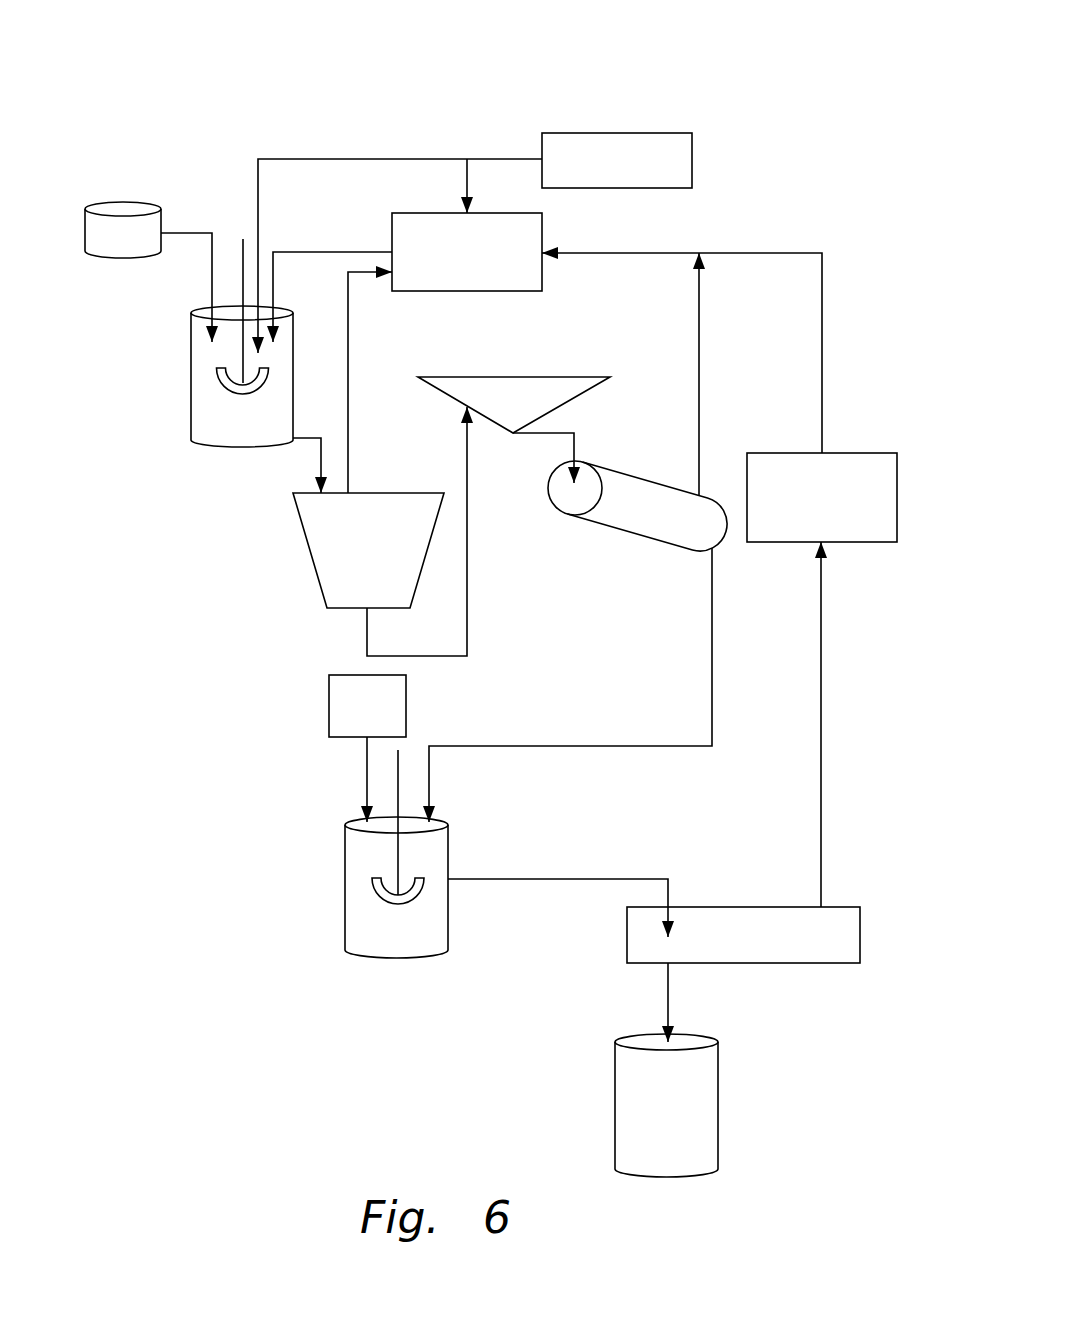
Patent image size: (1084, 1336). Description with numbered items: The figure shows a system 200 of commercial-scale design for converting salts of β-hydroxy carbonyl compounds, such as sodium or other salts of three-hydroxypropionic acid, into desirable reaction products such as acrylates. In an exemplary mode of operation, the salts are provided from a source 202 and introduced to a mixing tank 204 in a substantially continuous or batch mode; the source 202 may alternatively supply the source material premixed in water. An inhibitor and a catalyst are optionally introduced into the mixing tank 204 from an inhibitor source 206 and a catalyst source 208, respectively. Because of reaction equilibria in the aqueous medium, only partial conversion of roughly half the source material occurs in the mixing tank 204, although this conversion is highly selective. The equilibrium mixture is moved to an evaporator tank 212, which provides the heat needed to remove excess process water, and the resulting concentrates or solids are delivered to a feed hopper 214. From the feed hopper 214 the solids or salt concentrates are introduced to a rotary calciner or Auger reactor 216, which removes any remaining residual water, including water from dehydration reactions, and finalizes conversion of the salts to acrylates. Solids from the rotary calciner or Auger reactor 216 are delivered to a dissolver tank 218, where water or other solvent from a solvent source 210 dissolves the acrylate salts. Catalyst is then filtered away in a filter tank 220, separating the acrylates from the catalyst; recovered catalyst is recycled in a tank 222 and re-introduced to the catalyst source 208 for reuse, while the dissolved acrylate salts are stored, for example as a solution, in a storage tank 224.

The system 200 is at (753, 88).
The source 202 is at (96, 249).
The mixing tank 204 is at (215, 435).
The inhibitor source 206 is at (590, 175).
The catalyst source 208 is at (439, 266).
The solvent source 210 is at (341, 720).
The evaporator tank 212 is at (342, 565).
The feed hopper 214 is at (485, 411).
The rotary calciner or Auger reactor 216 is at (647, 528).
The dissolver tank 218 is at (370, 945).
The filter tank 220 is at (716, 948).
The tank 222 is at (795, 511).
The storage tank 224 is at (640, 1124).